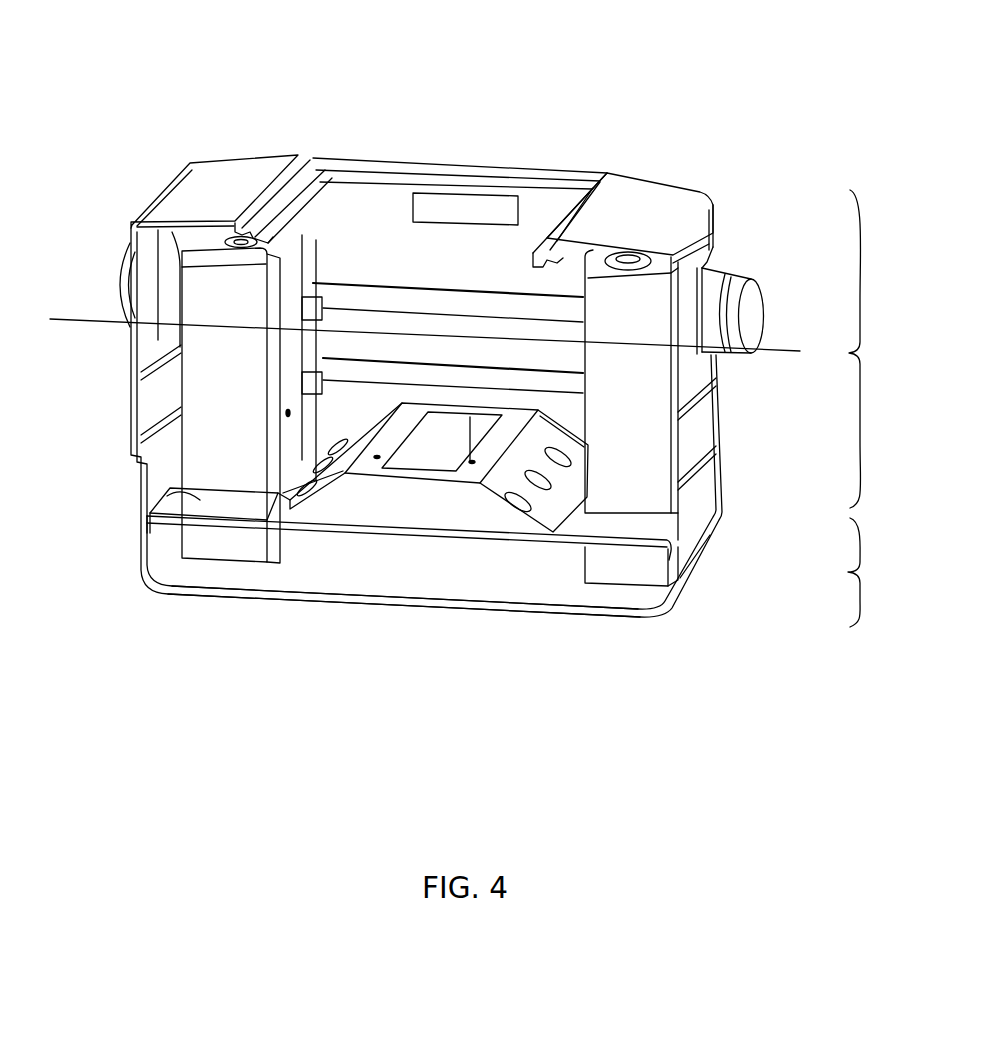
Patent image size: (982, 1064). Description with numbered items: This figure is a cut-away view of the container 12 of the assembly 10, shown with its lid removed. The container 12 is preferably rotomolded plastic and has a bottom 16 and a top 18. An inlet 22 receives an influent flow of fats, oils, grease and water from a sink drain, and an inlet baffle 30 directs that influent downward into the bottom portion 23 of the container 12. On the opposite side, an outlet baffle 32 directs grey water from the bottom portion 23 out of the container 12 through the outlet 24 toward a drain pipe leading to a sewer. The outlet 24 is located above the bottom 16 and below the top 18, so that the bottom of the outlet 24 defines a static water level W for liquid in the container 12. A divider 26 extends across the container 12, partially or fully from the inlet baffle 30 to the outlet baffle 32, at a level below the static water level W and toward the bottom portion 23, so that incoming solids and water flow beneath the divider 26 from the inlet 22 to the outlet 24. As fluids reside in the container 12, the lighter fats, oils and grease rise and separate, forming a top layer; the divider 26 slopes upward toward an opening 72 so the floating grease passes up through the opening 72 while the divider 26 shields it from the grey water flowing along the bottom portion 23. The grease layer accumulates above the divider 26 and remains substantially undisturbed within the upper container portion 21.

The assembly 10 is at (178, 108).
The container 12 is at (236, 200).
The bottom 16 is at (610, 616).
The top 18 is at (668, 223).
The upper container portion 21 is at (877, 349).
The inlet 22 is at (123, 292).
The bottom portion 23 is at (877, 572).
The outlet 24 is at (750, 305).
The divider 26 is at (147, 507).
The inlet baffle 30 is at (246, 381).
The outlet baffle 32 is at (654, 394).
The opening 72 is at (443, 438).
The static water level W is at (424, 336).